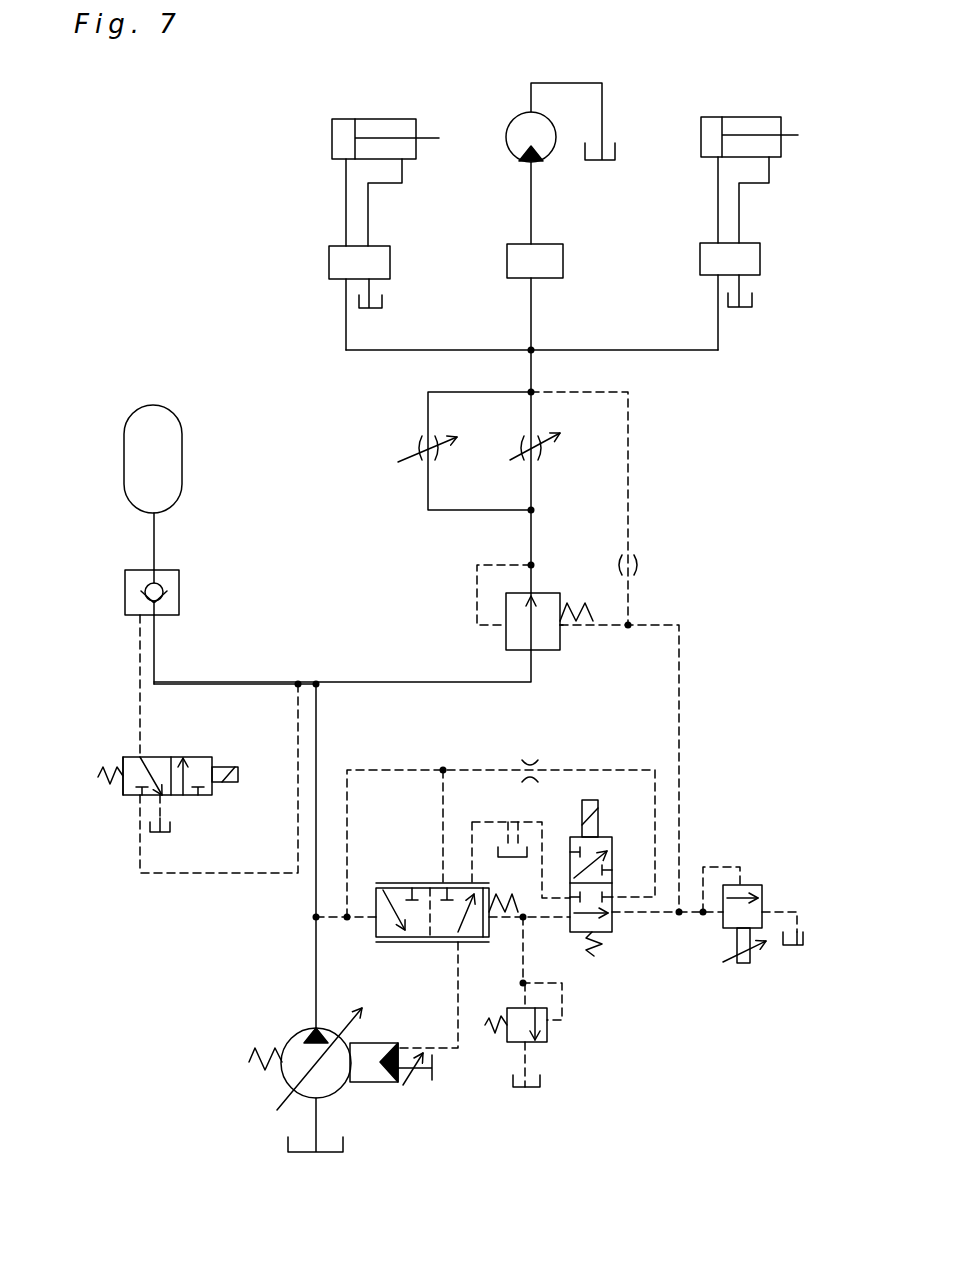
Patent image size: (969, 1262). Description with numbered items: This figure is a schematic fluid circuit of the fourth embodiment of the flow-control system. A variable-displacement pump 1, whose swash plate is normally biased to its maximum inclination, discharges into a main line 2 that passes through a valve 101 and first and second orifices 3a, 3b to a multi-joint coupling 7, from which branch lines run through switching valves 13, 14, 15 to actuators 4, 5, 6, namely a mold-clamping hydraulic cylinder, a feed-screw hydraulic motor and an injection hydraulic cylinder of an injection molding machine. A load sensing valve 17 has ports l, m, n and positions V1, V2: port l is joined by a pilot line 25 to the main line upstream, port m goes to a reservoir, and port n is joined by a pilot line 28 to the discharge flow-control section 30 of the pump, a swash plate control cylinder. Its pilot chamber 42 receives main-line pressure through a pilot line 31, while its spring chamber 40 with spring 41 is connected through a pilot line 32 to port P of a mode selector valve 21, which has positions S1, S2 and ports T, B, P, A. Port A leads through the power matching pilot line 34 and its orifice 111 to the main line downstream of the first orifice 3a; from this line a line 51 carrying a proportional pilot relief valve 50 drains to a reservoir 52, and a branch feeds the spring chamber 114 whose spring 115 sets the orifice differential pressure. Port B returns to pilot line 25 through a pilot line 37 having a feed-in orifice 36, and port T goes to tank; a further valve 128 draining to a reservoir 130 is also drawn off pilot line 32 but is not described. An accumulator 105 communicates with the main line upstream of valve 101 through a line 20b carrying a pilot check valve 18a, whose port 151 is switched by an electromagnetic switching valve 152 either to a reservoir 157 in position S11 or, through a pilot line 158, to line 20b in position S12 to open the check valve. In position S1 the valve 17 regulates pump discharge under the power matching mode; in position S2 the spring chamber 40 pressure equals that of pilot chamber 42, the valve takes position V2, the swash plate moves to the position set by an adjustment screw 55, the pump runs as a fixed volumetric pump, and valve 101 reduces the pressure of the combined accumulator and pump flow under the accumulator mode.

The variable-displacement pump 1 is at (285, 1033).
The main line 2 is at (531, 370).
The first orifice 3a is at (550, 448).
The second orifice 3b is at (407, 450).
The actuator 4 is at (343, 113).
The actuator 5 is at (508, 112).
The actuator 6 is at (697, 113).
The multi-joint coupling 7 is at (531, 350).
The switching valve 13 is at (322, 244).
The switching valve 14 is at (503, 241).
The switching valve 15 is at (693, 243).
The load sensing valve 17 is at (429, 909).
The shut-off valve 18a is at (122, 582).
The line 20b is at (265, 684).
The mode selector valve 21 is at (613, 924).
The pilot line 25 is at (393, 770).
The pilot line 28 is at (383, 1045).
The discharge flow-control section 30 is at (377, 1083).
The pilot line 31 is at (316, 918).
The pilot line 32 is at (545, 918).
The pilot line 34 is at (628, 462).
The feed-in orifice 36 is at (530, 762).
The pilot line 37 is at (597, 770).
The spring chamber 40 is at (497, 918).
The spring 41 is at (512, 921).
The pilot chamber 42 is at (376, 920).
The proportional pilot relief valve 50 is at (758, 881).
The line 51 is at (697, 916).
The reservoir 52 is at (803, 947).
The adjustment screw 55 is at (425, 1069).
The valve 101 is at (511, 608).
The accumulator 105 is at (118, 422).
The orifice 111 is at (637, 565).
The spring chamber 114 is at (562, 627).
The spring 115 is at (575, 602).
The relief valve 128 is at (558, 1028).
The drain line 130 is at (533, 1090).
The port 151 is at (133, 620).
The electromagnetic switching valve 152 is at (153, 803).
The reservoir 157 is at (171, 828).
The pilot line 158 is at (243, 873).
The position of mode selector valve S1 is at (590, 934).
The position of mode selector valve S2 is at (600, 840).
The position of electromagnetic switching valve S11 is at (158, 767).
The position of electromagnetic switching valve S12 is at (202, 763).
The port T is at (570, 897).
The port B is at (613, 895).
The port P is at (584, 918).
The port A is at (615, 920).
The position of load sensing valve V1 is at (392, 927).
The position of load sensing valve V2 is at (468, 927).
The port l is at (437, 883).
The port m is at (475, 883).
The port n is at (455, 945).